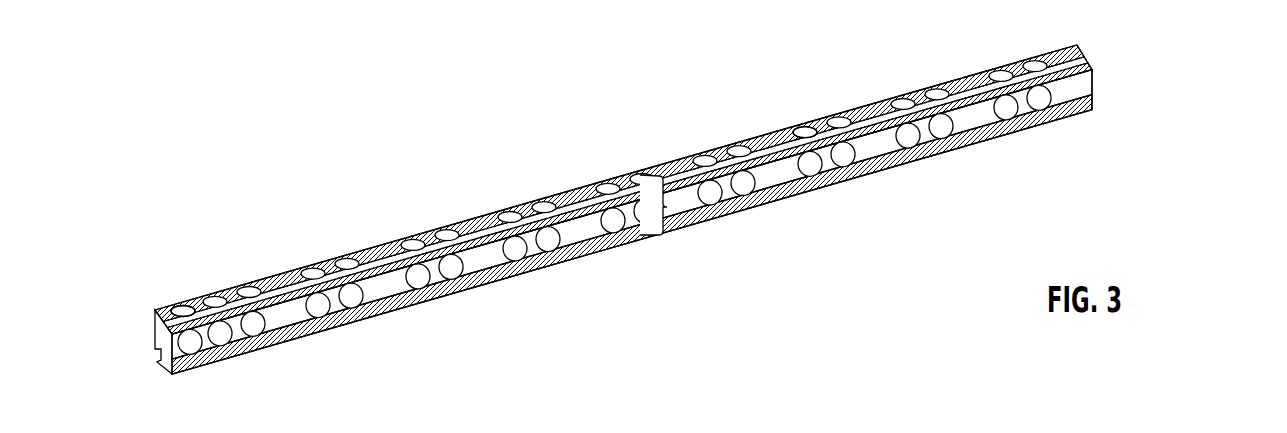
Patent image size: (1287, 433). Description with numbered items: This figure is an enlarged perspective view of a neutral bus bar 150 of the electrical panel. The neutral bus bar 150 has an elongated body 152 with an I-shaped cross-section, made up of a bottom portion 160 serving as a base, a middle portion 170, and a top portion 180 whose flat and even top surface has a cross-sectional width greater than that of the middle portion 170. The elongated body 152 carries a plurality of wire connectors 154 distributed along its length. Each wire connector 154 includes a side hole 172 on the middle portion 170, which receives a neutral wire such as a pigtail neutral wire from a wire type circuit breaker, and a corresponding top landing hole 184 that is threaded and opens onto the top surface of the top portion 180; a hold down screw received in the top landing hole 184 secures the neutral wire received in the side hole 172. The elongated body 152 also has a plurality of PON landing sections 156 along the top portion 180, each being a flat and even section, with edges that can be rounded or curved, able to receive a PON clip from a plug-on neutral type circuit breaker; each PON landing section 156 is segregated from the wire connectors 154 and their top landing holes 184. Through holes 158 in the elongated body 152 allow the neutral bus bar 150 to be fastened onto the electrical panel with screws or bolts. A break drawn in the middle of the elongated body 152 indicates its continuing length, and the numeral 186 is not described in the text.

The neutral bus bar 150 is at (623, 209).
The elongated body 152 is at (1148, 77).
The wire connector 154 is at (667, 207).
The PON landing section 156 is at (372, 246).
The through hole 158 is at (178, 310).
The bottom portion 160 is at (211, 378).
The middle portion 170 is at (301, 323).
The side hole 172 is at (705, 190).
The top portion 180 is at (144, 312).
The top landing hole 184 is at (415, 249).
The channel 186 is at (629, 211).